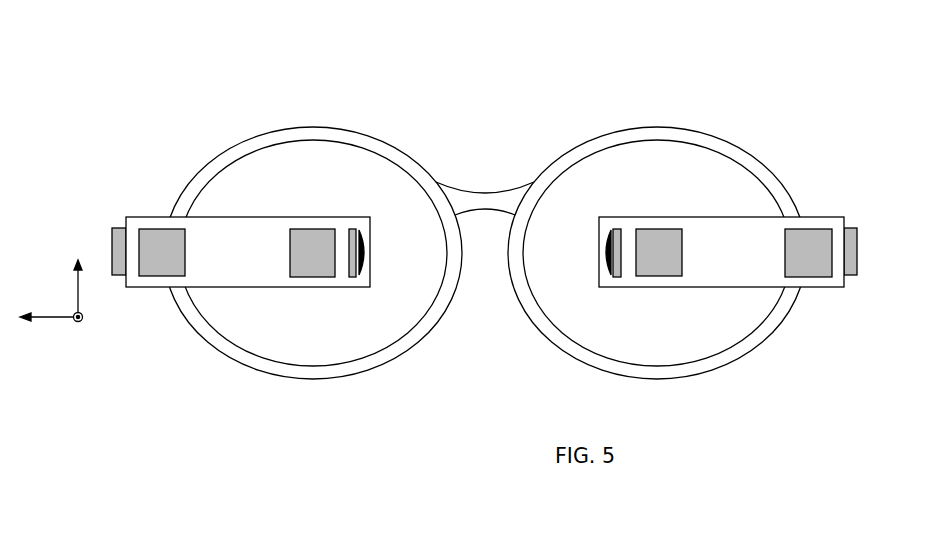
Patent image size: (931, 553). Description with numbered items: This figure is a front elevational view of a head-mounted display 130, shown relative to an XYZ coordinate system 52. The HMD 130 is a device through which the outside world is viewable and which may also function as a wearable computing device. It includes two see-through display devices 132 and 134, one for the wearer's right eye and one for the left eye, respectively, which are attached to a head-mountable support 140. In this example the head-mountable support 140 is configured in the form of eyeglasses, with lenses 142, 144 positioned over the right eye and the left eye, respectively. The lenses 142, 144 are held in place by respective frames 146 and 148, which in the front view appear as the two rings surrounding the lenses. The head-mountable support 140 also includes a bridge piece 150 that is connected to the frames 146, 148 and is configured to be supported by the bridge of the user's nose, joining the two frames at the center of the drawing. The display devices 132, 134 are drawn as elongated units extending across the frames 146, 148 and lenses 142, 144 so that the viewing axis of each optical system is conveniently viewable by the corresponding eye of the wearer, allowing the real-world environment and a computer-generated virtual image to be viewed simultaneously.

The XYZ coordinate system 52 is at (60, 318).
The head-mounted display 130 is at (478, 101).
The see-through display device 132 is at (230, 217).
The see-through display device 134 is at (730, 217).
The head-mountable support 140 is at (613, 131).
The lens 142 is at (295, 360).
The lens 144 is at (718, 350).
The frame 146 is at (208, 342).
The frame 148 is at (773, 333).
The bridge piece 150 is at (513, 186).